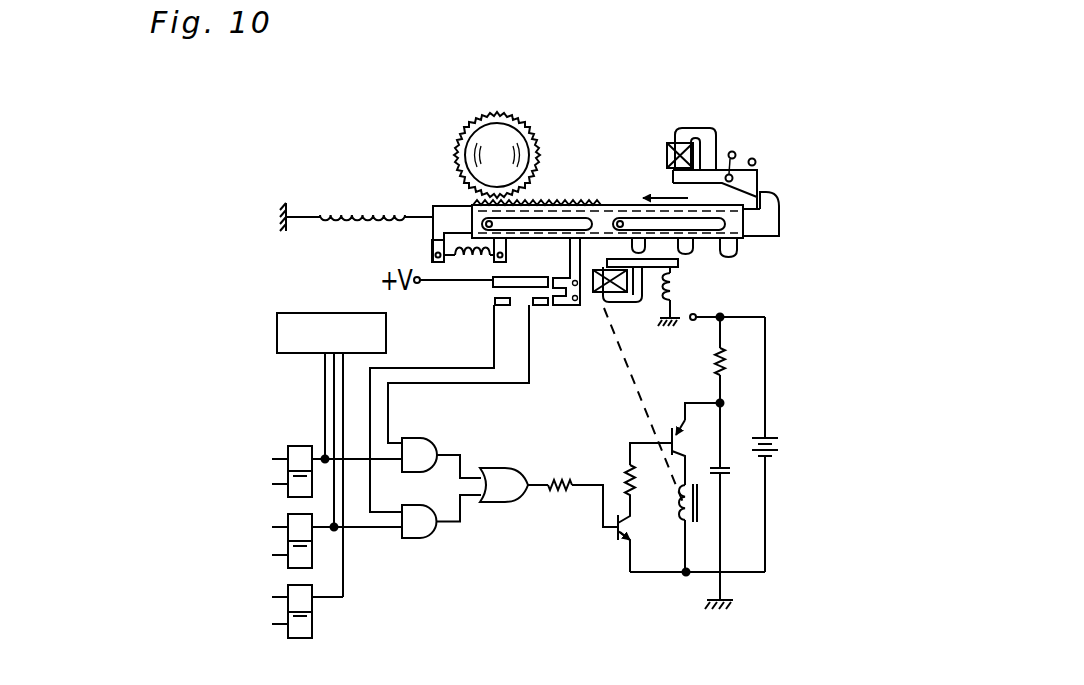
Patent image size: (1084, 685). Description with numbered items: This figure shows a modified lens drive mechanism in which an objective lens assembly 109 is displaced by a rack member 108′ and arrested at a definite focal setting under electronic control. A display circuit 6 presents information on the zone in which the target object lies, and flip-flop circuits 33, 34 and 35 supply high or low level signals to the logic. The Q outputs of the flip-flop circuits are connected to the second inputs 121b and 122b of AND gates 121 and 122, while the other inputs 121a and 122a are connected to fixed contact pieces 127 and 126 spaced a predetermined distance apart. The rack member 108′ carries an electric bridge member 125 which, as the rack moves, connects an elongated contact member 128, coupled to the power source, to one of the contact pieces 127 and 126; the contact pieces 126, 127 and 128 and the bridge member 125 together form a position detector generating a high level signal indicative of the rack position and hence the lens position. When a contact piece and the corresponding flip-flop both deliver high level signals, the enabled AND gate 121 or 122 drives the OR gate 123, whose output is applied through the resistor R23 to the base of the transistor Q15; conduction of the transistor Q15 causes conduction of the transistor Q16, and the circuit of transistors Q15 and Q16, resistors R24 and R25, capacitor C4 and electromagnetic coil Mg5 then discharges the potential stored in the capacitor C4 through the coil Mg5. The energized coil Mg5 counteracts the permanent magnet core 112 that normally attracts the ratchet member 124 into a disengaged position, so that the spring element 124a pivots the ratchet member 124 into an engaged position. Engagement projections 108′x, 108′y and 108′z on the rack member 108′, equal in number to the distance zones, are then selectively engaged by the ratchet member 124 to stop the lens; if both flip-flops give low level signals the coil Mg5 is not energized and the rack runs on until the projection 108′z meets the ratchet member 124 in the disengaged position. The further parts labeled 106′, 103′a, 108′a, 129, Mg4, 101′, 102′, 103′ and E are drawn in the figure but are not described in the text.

The display circuit 6 is at (277, 333).
The flip-flop circuit 33 is at (288, 448).
The flip-flop circuit 34 is at (288, 517).
The flip-flop circuit 35 is at (288, 587).
The spring 106′ is at (360, 215).
The bracket contact 103′a is at (432, 234).
The objective lens assembly 109 is at (498, 146).
The rack teeth 108′a is at (541, 200).
The rack member 108′ is at (604, 218).
The direction arrow 129 is at (667, 194).
The magnet Mg4 is at (668, 145).
The bracket 101′ is at (706, 130).
The plate 102′ is at (752, 173).
The stopper member 103′ is at (775, 210).
The engagement projection 108′x is at (646, 250).
The engagement projection 108′y is at (694, 250).
The engagement projection 108′z is at (746, 240).
The elongated contact member 128 is at (493, 284).
The electric bridge member 125 is at (568, 306).
The fixed contact piece 126 is at (500, 306).
The fixed contact piece 127 is at (541, 306).
The permanent magnet core 112 is at (637, 303).
The ratchet member 124 is at (612, 254).
The spring element 124a is at (676, 292).
The AND gate 121 is at (438, 441).
The input of AND gate 121 121a is at (398, 438).
The input of AND gate 121 121b is at (388, 462).
The AND gate 122 is at (436, 538).
The input of AND gate 122 122a is at (393, 530).
The input of AND gate 122 122b is at (372, 530).
The OR gate 123 is at (500, 467).
The resistor R23 is at (561, 489).
The resistor R24 is at (616, 456).
The resistor R25 is at (728, 352).
The transistor Q15 is at (615, 539).
The transistor Q16 is at (678, 441).
The electromagnetic coil Mg5 is at (680, 513).
The capacitor C4 is at (733, 475).
The battery E is at (780, 450).